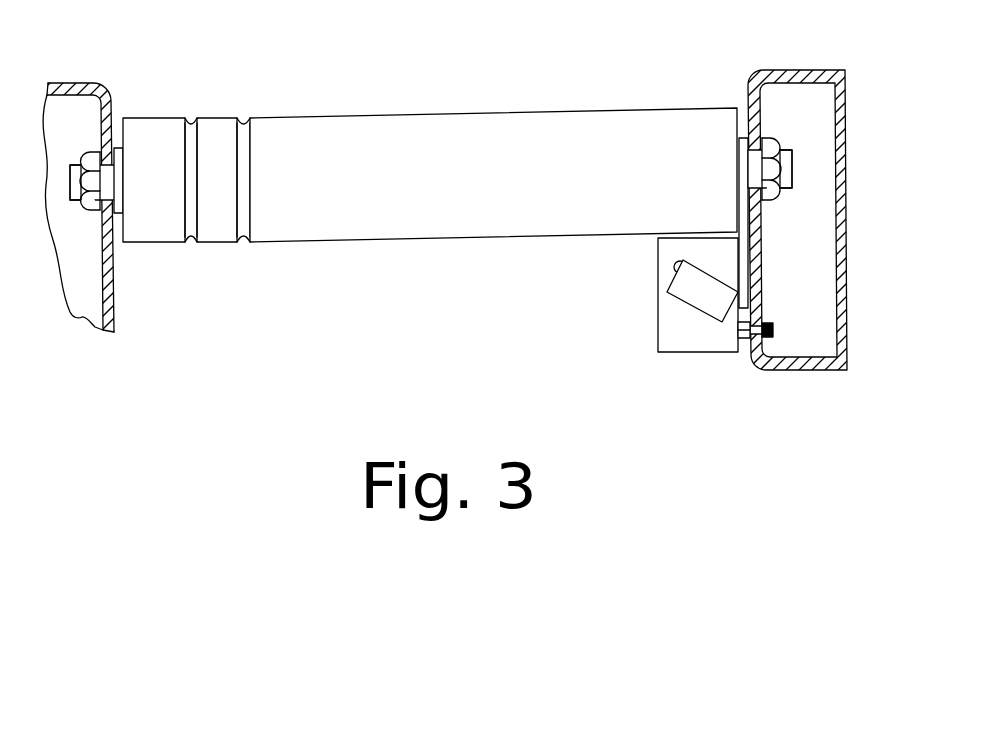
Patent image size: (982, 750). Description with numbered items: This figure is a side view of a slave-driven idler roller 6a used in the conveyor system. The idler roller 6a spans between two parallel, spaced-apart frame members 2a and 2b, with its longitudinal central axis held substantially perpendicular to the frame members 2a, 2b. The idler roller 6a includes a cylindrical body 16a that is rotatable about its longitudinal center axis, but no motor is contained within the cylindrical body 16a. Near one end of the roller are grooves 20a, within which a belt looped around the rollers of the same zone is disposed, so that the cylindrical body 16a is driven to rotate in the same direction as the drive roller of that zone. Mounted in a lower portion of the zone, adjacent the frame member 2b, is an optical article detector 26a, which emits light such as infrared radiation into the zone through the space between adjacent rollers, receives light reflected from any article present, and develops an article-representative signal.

The frame member 2a is at (90, 285).
The frame member 2b is at (803, 330).
The idler roller 6a is at (527, 90).
The cylindrical body 16a is at (347, 133).
The groove 20a is at (187, 118).
The article detector 26a is at (698, 298).